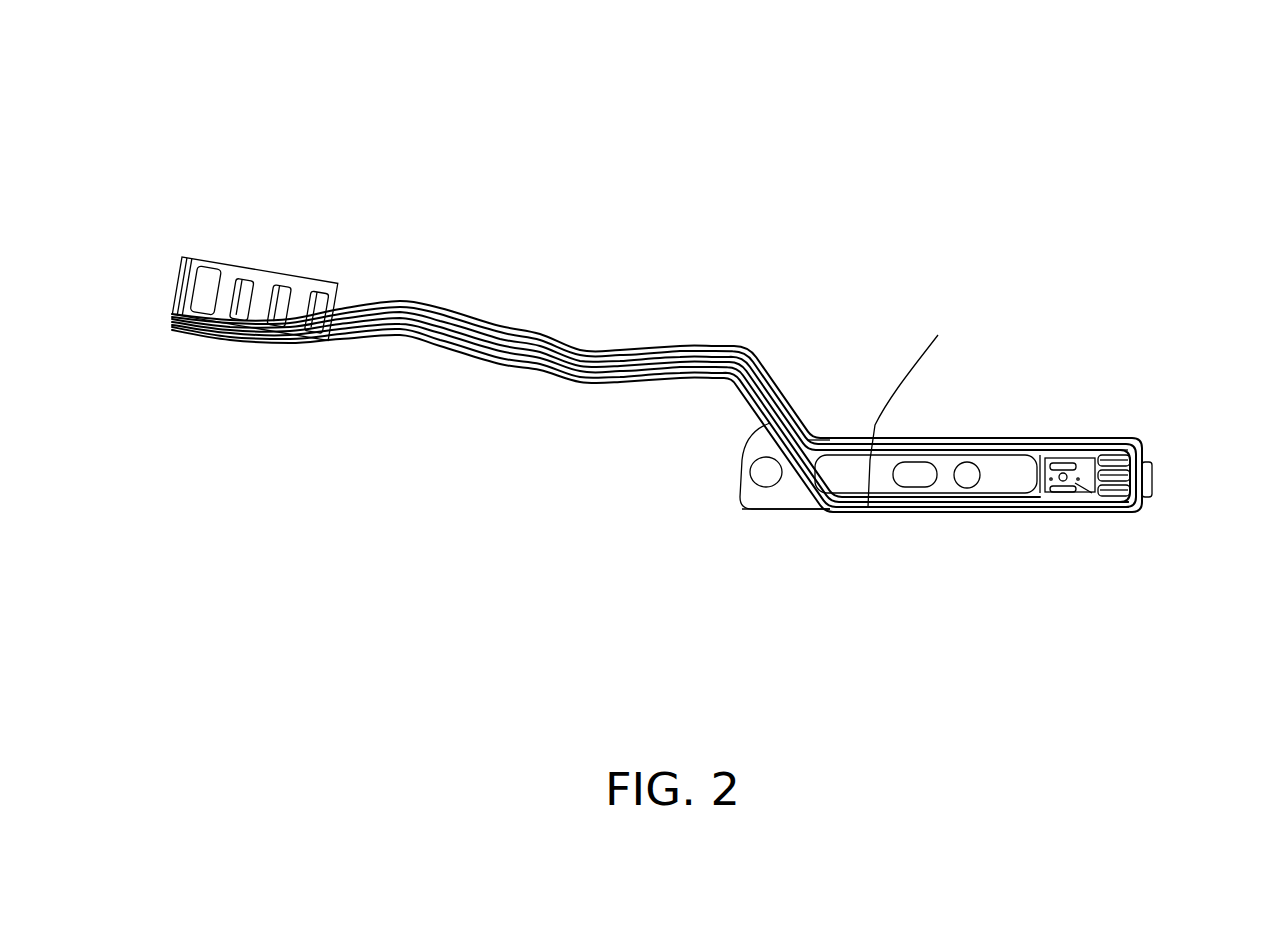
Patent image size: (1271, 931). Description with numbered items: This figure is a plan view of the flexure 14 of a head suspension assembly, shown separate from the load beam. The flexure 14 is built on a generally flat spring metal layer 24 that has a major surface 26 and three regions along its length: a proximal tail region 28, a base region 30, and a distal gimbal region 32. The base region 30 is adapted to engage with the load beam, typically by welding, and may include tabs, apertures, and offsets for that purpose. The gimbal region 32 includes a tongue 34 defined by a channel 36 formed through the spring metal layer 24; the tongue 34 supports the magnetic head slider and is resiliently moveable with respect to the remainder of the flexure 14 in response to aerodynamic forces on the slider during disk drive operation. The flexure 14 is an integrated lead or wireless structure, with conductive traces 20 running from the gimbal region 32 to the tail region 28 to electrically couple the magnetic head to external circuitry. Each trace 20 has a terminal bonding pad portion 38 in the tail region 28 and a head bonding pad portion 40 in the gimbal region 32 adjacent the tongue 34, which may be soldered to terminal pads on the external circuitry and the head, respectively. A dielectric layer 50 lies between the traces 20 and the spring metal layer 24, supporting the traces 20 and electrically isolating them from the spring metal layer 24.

The flexure 14 is at (459, 200).
The terminal bonding pad portion 38 is at (250, 272).
The proximal tail region 28 is at (333, 292).
The spring metal layer 24 is at (752, 502).
The base region 30 is at (787, 505).
The conductive traces 20 is at (973, 440).
The dielectric layer 50 is at (808, 440).
The major surface 26 is at (917, 401).
The channel 36 is at (1042, 495).
The tongue 34 is at (1105, 497).
The head bonding pad portion 40 is at (1120, 445).
The distal gimbal region 32 is at (1138, 445).